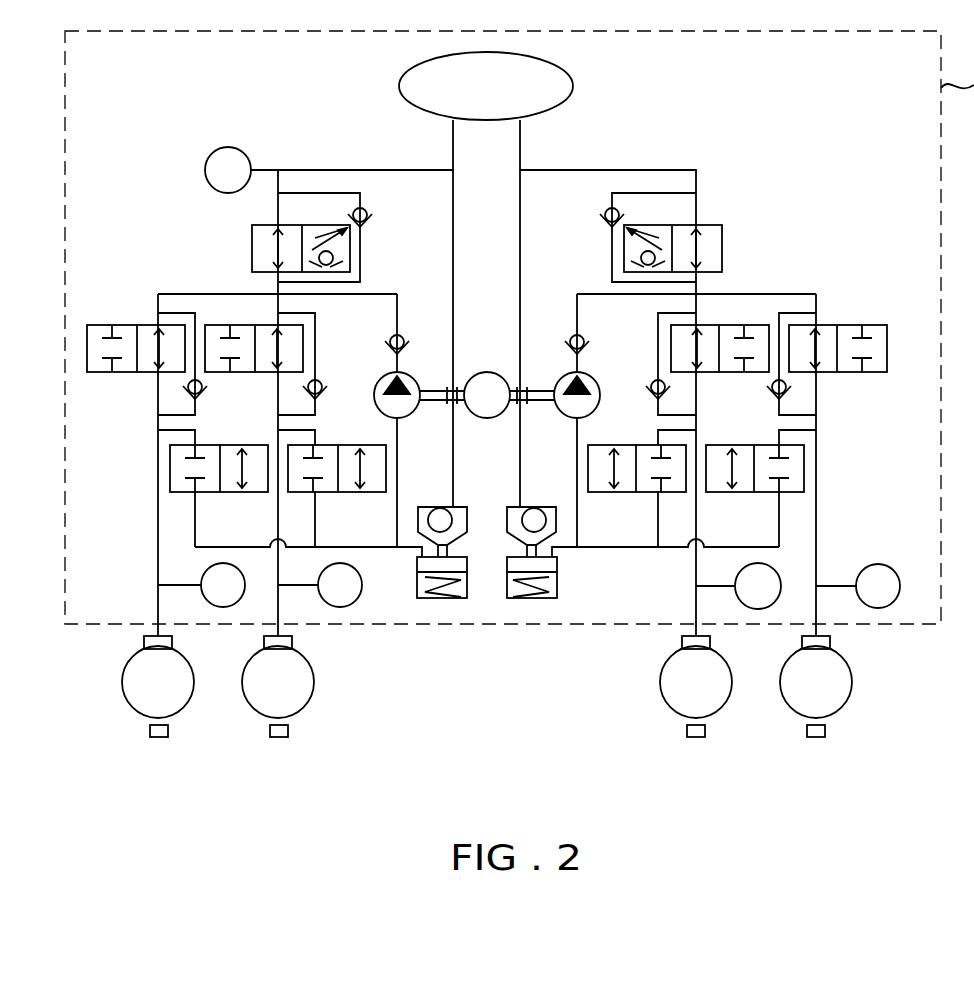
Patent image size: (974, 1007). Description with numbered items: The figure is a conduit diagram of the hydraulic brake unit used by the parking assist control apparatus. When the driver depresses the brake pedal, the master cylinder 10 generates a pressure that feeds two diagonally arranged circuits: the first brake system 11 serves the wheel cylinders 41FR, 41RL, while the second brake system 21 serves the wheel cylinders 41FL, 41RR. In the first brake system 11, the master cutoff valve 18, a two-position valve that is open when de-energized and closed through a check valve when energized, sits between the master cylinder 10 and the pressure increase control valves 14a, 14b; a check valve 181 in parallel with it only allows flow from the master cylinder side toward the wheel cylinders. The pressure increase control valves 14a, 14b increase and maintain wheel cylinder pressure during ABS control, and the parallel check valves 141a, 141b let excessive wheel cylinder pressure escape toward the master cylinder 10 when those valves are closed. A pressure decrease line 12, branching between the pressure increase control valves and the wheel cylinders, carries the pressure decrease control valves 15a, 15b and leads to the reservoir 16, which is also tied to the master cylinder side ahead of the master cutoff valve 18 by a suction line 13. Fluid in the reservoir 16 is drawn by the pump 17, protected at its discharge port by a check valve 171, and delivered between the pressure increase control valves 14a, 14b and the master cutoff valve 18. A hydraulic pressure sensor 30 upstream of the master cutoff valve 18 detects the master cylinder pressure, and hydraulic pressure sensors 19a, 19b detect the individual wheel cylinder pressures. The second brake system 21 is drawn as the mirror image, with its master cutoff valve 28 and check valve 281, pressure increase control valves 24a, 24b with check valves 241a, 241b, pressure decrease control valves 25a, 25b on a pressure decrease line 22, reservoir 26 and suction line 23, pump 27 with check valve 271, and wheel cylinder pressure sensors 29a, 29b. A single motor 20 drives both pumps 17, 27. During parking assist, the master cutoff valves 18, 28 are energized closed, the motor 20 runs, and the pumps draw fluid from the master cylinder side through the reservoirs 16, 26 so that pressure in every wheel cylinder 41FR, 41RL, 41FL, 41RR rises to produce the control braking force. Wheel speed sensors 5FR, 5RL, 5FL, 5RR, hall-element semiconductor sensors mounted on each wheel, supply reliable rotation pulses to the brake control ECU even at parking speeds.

The master cylinder 10 is at (574, 86).
The first brake system 11 is at (453, 148).
The pressure decrease line 12 is at (232, 547).
The suction line 13 is at (453, 278).
The pressure increase control valve 14a is at (122, 325).
The pressure increase control valve 14b is at (240, 325).
The check valve 141a is at (189, 388).
The check valve 141b is at (345, 365).
The pressure decrease control valve 15a is at (232, 445).
The pressure decrease control valve 15b is at (350, 445).
The reservoir 16 is at (417, 580).
The pump 17 is at (416, 412).
The check valve 171 is at (397, 335).
The master cutoff valve 18 is at (252, 247).
The check valve 181 is at (368, 215).
The hydraulic pressure sensor 19a is at (205, 578).
The hydraulic pressure sensor 19b is at (321, 578).
The motor 20 is at (487, 418).
The second brake system 21 is at (520, 148).
The second return passage 22 is at (620, 547).
The second pump passage 23 is at (520, 278).
The pressure increase control valve 24a is at (735, 325).
The pressure increase control valve 24b is at (850, 325).
The check valve 241a is at (652, 382).
The check valve 241b is at (786, 391).
The pressure decrease control valve 25a is at (625, 445).
The pressure decrease control valve 25b is at (741, 445).
The reservoir 26 is at (555, 580).
The pump 27 is at (558, 412).
The check valve 271 is at (577, 335).
The master cutoff valve 28 is at (722, 247).
The check valve 281 is at (604, 215).
The hydraulic pressure sensor 29a is at (772, 567).
The hydraulic pressure sensor 29b is at (882, 564).
The hydraulic pressure sensor 30 is at (228, 147).
The wheel cylinder 41FR is at (144, 643).
The wheel cylinder 41RL is at (292, 643).
The wheel cylinder 41FL is at (682, 643).
The wheel cylinder 41RR is at (830, 643).
The wheel speed sensor 5FR is at (150, 731).
The wheel speed sensor 5RL is at (288, 731).
The wheel speed sensor 5FL is at (687, 731).
The wheel speed sensor 5RR is at (825, 731).